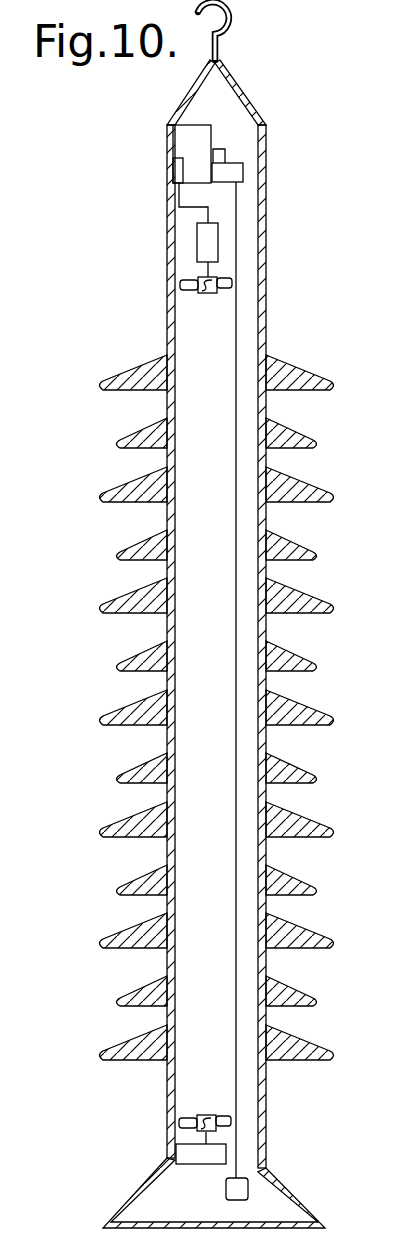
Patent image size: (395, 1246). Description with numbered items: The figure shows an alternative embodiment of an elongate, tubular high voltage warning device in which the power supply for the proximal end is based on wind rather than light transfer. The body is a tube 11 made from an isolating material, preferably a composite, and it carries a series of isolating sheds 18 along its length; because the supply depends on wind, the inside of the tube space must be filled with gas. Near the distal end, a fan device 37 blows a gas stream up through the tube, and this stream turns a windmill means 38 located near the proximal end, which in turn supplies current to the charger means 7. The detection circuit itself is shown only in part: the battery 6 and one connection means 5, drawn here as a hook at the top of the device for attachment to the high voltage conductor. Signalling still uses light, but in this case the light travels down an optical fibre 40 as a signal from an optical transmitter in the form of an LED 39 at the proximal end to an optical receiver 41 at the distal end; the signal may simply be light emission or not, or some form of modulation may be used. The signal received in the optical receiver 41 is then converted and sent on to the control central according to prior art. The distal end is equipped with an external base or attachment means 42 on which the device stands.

The connection means 5 is at (232, 20).
The battery 6 is at (188, 142).
The charger means 7 is at (180, 170).
The tube 11 is at (322, 713).
The isolating part 18 is at (267, 575).
The fan device 37 is at (190, 1152).
The windmill means 38 is at (207, 243).
The optical transmitter (LED) 39 is at (235, 172).
The optical fibre 40 is at (238, 222).
The optical receiver 41 is at (242, 1190).
The base or attachment means 42 is at (320, 1220).